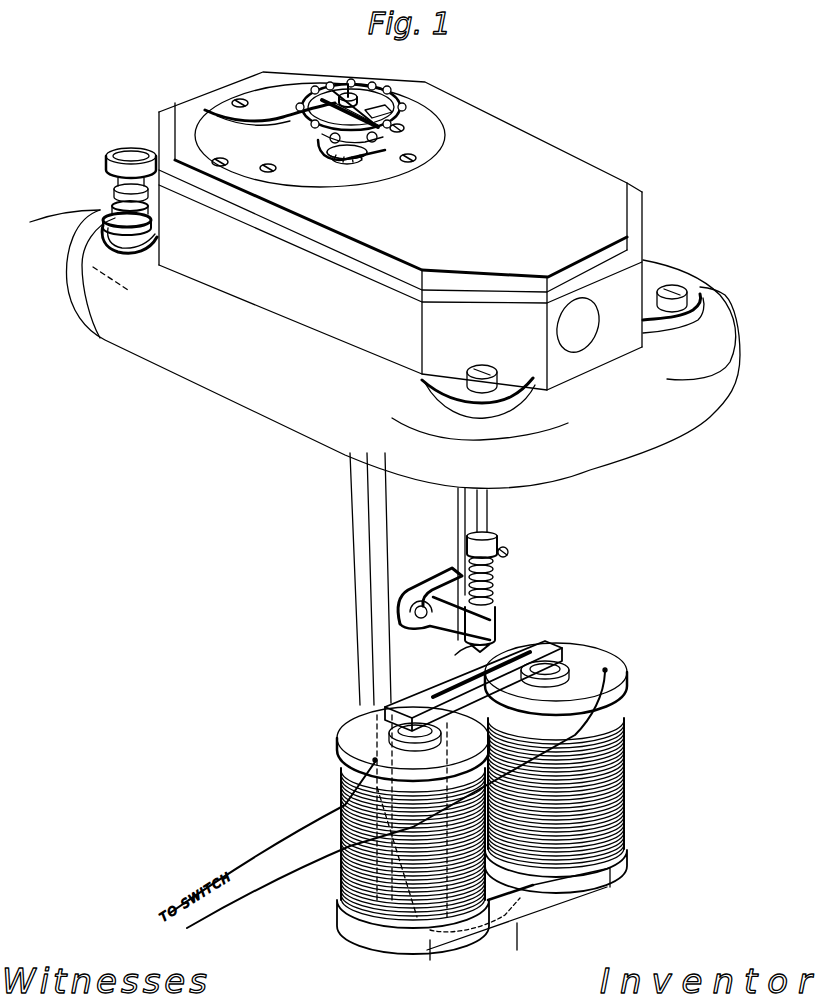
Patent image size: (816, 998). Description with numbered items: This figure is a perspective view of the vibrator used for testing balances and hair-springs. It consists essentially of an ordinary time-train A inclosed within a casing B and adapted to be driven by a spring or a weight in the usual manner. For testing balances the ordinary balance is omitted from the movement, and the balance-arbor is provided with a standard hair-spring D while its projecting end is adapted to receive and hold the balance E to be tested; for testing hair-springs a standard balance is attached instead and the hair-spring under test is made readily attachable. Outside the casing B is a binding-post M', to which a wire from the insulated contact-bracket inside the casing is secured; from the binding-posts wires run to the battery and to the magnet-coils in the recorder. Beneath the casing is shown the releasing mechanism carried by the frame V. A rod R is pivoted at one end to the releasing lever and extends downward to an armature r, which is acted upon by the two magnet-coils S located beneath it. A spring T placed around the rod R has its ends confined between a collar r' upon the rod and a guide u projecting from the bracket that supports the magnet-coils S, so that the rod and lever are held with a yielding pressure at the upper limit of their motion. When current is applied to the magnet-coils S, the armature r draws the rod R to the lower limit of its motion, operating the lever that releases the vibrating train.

The time-train A is at (320, 135).
The casing B is at (400, 245).
The hair-spring D is at (351, 161).
The balance E is at (380, 94).
The binding-post M' is at (110, 200).
The frame upright V is at (603, 332).
The rod R is at (488, 508).
The collar r' is at (503, 539).
The spring T is at (503, 598).
The guide u is at (490, 628).
The armature r is at (473, 671).
The magnet-coils S is at (473, 801).